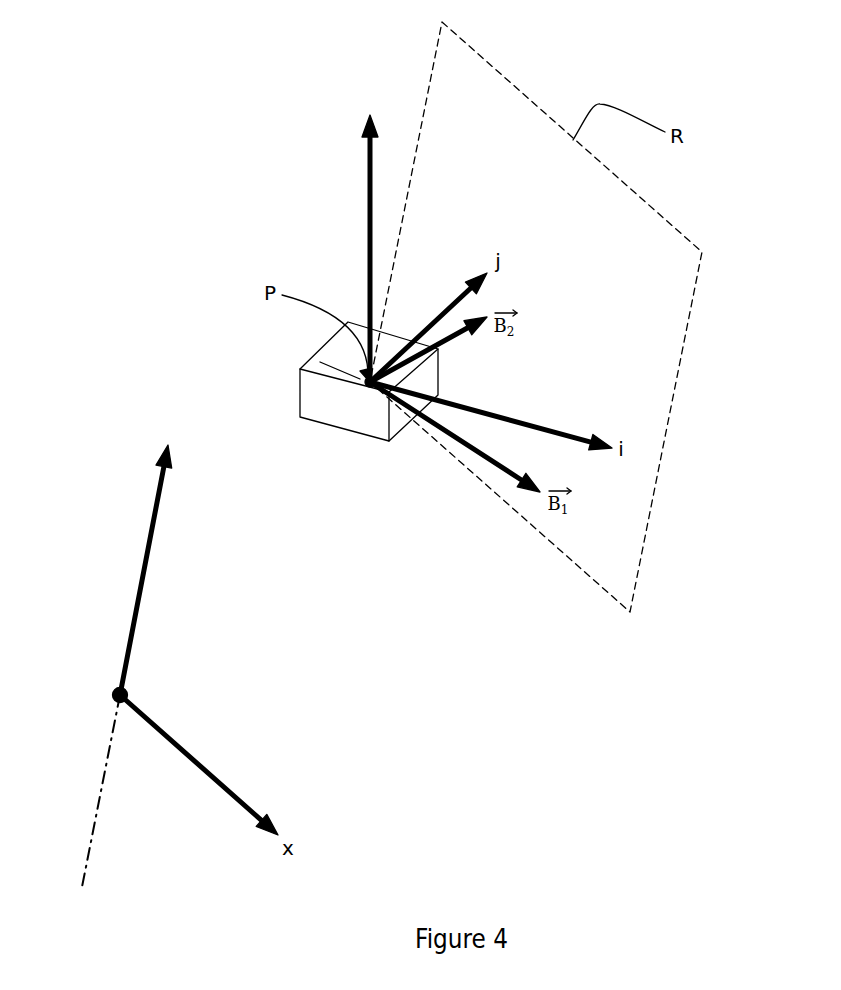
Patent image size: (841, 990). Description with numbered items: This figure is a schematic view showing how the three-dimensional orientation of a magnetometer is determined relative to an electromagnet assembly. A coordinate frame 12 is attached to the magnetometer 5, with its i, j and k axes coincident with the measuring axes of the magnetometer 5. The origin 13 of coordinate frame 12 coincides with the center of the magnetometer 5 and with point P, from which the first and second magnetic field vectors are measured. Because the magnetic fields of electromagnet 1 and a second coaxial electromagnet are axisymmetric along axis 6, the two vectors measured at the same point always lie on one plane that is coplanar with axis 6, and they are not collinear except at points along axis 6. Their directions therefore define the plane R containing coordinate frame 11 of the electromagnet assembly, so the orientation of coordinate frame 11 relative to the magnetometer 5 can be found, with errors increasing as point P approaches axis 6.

The electromagnet 1 is at (105, 684).
The magnetometer 5 is at (352, 422).
The axis 6 is at (112, 797).
The coordinate frame 11 is at (130, 584).
The coordinate frame 12 is at (360, 237).
The origin 13 is at (351, 375).